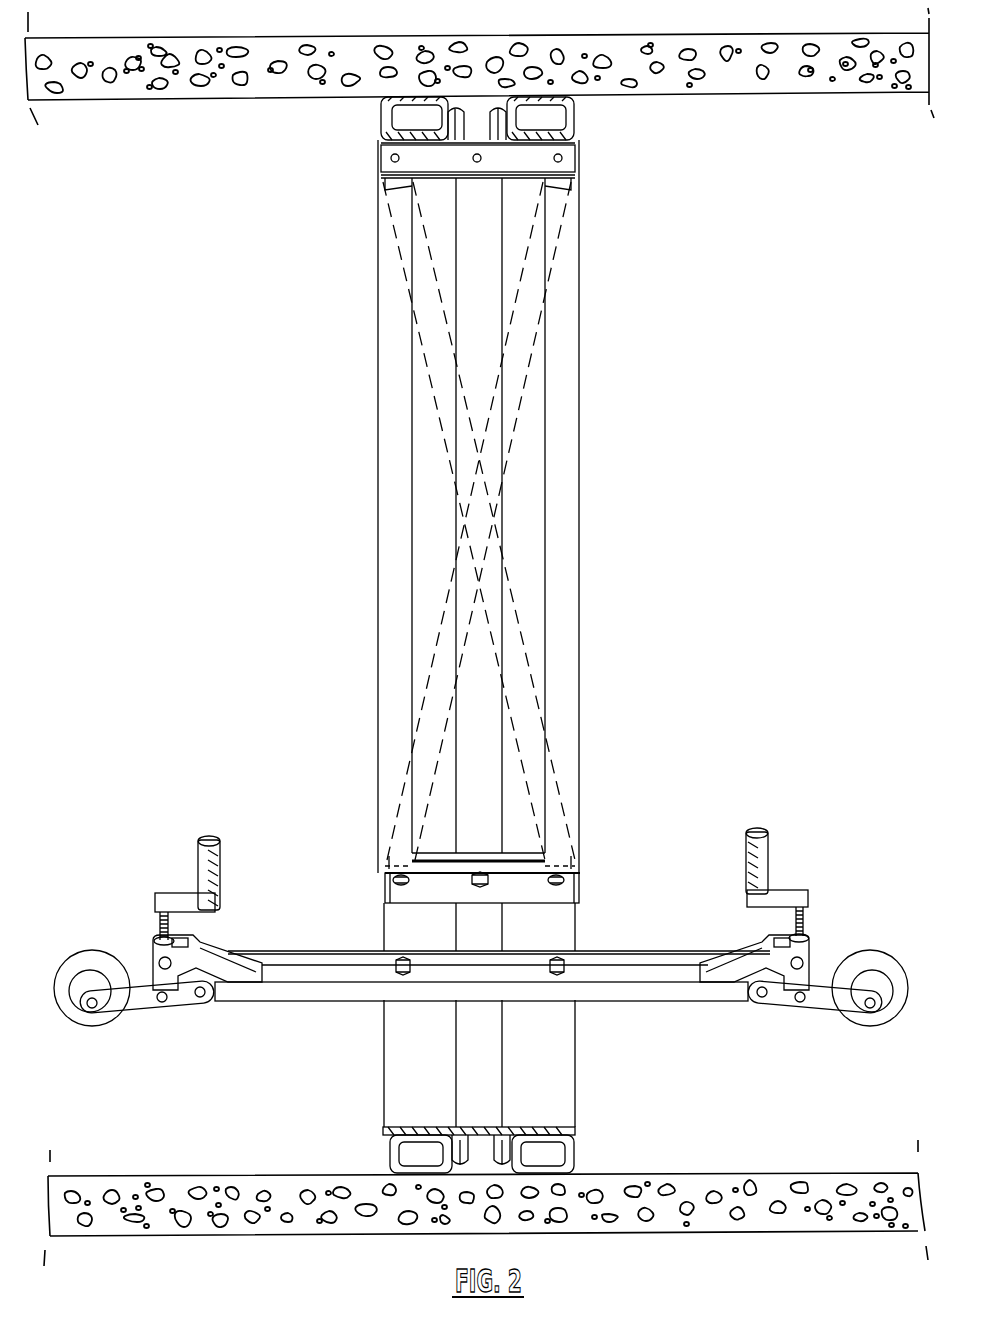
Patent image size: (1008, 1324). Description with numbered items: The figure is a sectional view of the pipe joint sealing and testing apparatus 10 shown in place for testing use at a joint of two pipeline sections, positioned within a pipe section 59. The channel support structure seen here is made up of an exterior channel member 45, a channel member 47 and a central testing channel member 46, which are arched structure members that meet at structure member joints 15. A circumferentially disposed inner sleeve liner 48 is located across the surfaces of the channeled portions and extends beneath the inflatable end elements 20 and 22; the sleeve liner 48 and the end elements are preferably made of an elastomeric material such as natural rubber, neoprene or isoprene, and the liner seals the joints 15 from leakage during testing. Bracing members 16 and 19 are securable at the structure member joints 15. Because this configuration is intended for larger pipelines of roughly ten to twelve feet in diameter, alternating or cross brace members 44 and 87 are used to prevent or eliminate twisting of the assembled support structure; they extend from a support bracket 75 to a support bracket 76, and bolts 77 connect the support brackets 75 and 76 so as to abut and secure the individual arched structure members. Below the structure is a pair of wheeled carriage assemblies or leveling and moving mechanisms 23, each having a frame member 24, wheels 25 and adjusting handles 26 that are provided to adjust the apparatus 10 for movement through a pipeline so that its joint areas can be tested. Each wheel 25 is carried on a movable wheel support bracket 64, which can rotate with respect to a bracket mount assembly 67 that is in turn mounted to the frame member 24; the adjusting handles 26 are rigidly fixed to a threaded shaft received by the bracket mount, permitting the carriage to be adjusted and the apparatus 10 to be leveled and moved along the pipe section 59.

The pipe joint sealing and testing apparatus 10 is at (592, 494).
The structure member joints 15 is at (575, 124).
The bracing member 16 is at (568, 350).
The bracing member 19 is at (395, 348).
The inflatable end element 20 is at (390, 1148).
The inflatable end element 22 is at (575, 1148).
The wheeled carriage assembly 23 is at (698, 1010).
The frame member 24 is at (297, 1002).
The wheels 25 is at (90, 962).
The adjusting handles 26 is at (775, 833).
The cross brace member 44 is at (525, 708).
The exterior channel member 45 is at (410, 1065).
The central testing channel member 46 is at (490, 1053).
The channel member 47 is at (558, 1075).
The inner sleeve liner 48 is at (560, 1128).
The pipe section 59 is at (835, 86).
The movable wheel support bracket 64 is at (160, 1006).
The bracket mount assembly 67 is at (215, 950).
The support bracket 75 is at (567, 160).
The support bracket 76 is at (576, 895).
The bolts 77 is at (565, 850).
The cross brace member 87 is at (437, 696).